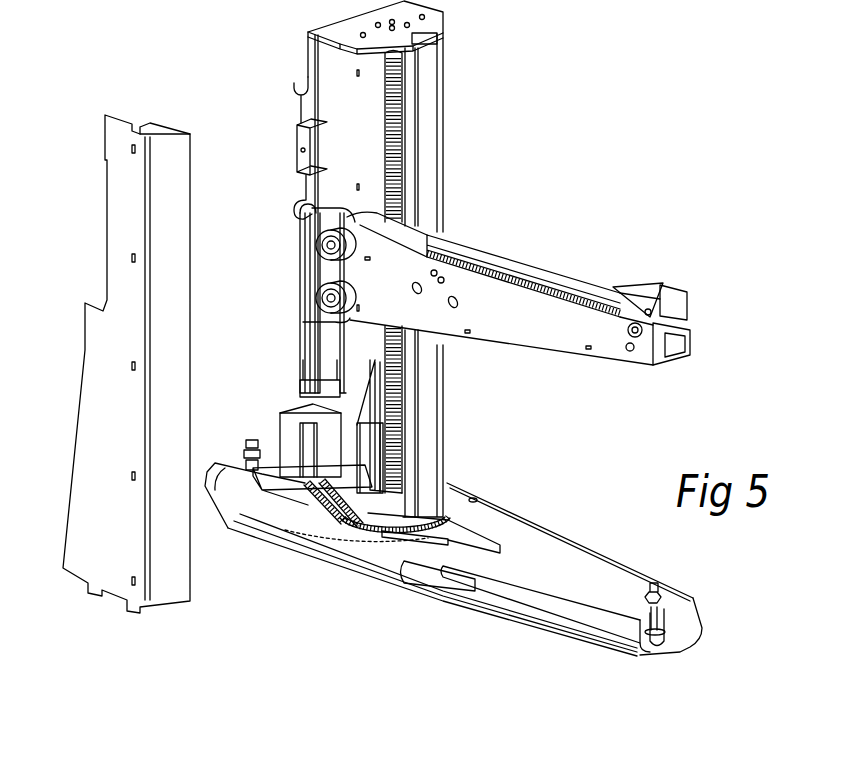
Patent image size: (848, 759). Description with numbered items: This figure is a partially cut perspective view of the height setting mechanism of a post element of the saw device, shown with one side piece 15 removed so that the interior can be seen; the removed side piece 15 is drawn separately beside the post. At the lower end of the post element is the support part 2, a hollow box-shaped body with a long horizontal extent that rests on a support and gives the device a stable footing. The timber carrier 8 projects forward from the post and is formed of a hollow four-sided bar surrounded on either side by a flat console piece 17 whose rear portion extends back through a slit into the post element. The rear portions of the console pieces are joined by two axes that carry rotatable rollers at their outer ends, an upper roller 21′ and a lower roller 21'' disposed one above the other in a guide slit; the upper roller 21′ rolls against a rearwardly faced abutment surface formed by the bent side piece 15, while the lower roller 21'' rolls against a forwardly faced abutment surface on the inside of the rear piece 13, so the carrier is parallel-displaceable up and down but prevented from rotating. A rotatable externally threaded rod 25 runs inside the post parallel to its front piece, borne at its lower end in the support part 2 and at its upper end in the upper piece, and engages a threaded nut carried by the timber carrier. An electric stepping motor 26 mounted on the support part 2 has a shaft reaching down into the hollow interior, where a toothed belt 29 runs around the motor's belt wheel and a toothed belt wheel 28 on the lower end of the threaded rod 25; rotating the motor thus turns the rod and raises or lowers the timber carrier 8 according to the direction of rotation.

The support part 2 is at (567, 560).
The timber carrier 8 is at (566, 255).
The rear piece 13 is at (307, 121).
The side piece 15 is at (117, 393).
The console piece 17 is at (503, 327).
The upper roller 21′ is at (310, 208).
The lower roller 21'' is at (295, 308).
The threaded rod 25 is at (385, 167).
The electric stepping motor 26 is at (283, 433).
The toothed belt wheel 28 is at (368, 517).
The toothed belt 29 is at (305, 483).